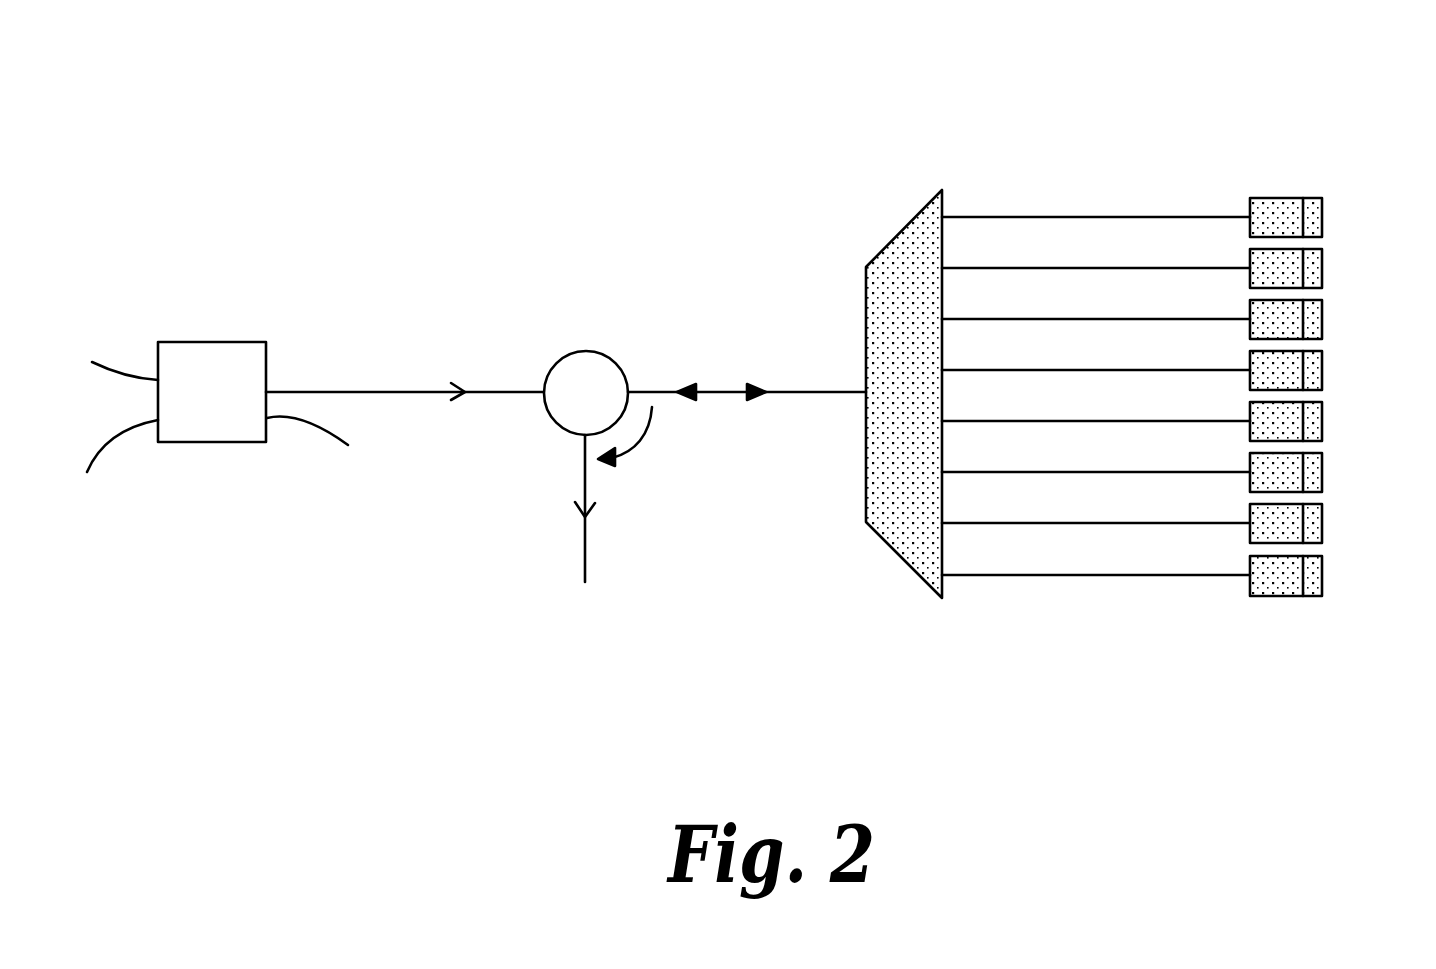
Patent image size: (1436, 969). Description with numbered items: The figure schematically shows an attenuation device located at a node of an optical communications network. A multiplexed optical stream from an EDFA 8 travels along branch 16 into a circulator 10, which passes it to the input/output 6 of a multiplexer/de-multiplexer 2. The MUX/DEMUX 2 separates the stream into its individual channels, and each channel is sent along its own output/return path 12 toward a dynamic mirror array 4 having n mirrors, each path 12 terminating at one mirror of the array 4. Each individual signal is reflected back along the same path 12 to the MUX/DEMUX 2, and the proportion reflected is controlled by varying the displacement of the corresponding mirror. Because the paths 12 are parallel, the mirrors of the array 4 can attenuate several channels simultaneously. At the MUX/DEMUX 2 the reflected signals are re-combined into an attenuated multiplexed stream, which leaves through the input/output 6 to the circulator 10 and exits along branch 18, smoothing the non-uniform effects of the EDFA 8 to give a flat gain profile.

The multiplexer/de-multiplexer 2 is at (895, 555).
The dynamic mirror array 4 is at (1324, 337).
The input/output 6 is at (713, 393).
The EDFA 8 is at (208, 443).
The circulator 10 is at (587, 352).
The output/return path 12 is at (1089, 367).
The branch 16 is at (408, 393).
The branch 18 is at (585, 562).